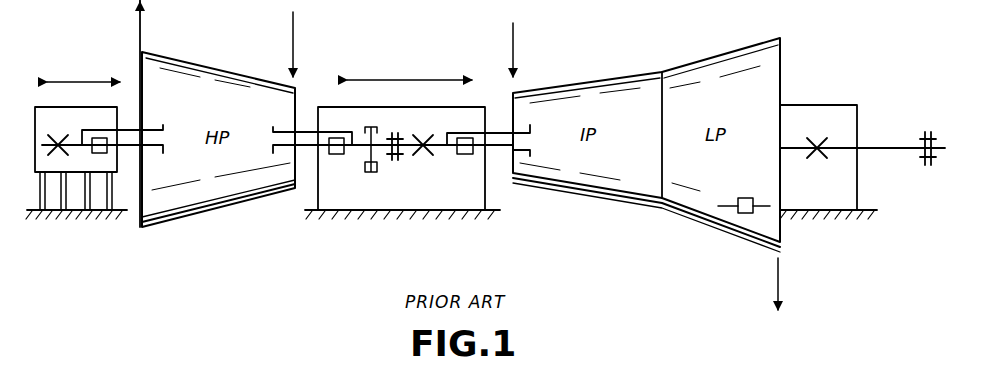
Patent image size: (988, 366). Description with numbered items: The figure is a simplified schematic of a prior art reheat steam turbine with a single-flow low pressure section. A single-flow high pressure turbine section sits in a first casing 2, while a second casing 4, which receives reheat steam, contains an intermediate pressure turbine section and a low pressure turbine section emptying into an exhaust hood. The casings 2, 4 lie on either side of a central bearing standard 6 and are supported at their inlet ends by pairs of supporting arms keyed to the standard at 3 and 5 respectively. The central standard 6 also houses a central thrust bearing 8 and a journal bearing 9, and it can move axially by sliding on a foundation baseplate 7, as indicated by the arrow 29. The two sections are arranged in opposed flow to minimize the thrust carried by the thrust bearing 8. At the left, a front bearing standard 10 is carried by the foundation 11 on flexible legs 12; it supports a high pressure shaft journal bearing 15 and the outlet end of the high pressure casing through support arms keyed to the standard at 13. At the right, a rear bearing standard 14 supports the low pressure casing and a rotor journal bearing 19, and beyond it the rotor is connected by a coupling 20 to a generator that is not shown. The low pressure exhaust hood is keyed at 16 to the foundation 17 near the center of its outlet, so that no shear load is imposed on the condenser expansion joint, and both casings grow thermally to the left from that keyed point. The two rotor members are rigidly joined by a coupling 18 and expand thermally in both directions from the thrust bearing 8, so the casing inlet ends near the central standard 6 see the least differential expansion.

The first casing 2 is at (213, 63).
The keyed point of high pressure casing supporting arms 3 is at (333, 138).
The second casing 4 is at (583, 80).
The keyed point of reheat casing supporting arms 5 is at (467, 138).
The central bearing standard 6 is at (342, 107).
The foundation baseplate 7 is at (493, 208).
The central thrust bearing 8 is at (364, 165).
The journal bearing 9 is at (428, 160).
The front bearing standard 10 is at (40, 118).
The foundation 11 is at (77, 200).
The flexible legs 12 is at (37, 190).
The keyed point of high pressure casing outlet support arms 13 is at (107, 152).
The rear bearing standard 14 is at (852, 112).
The high pressure shaft journal bearing 15 is at (55, 138).
The keyed point of low pressure exhaust hood 16 is at (748, 213).
The foundation 17 is at (868, 210).
The coupling 18 is at (391, 163).
The rotor journal bearing 19 is at (812, 143).
The coupling 20 is at (922, 140).
The arrow 29 is at (387, 80).